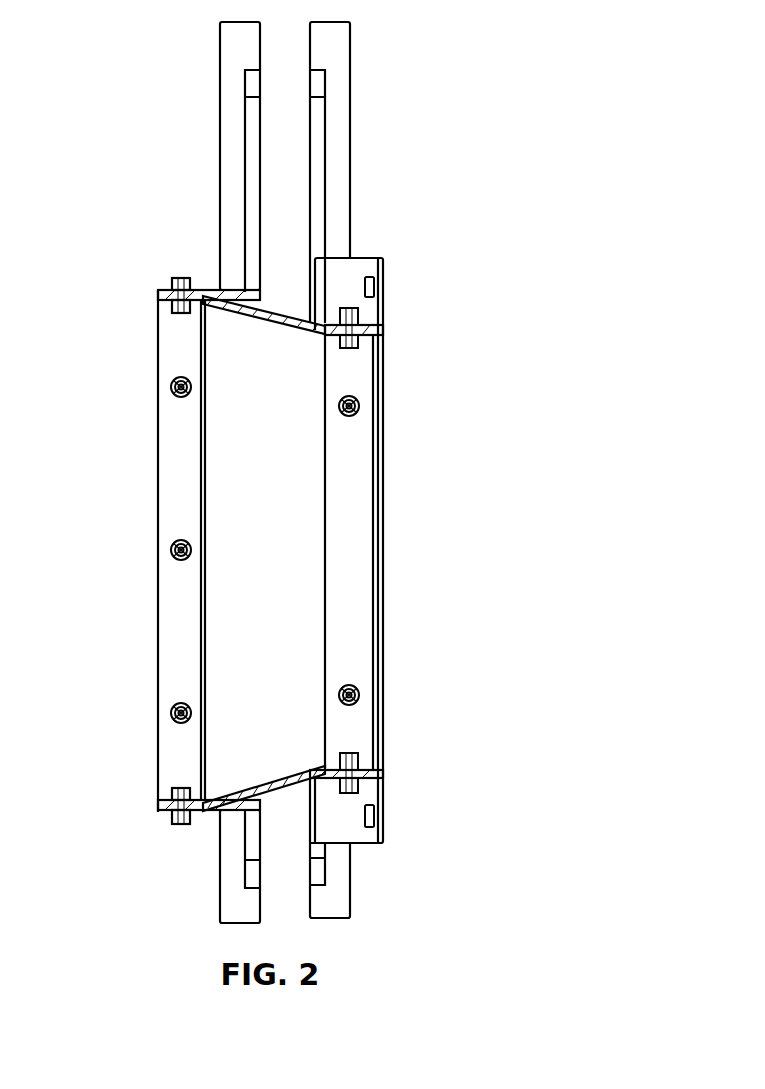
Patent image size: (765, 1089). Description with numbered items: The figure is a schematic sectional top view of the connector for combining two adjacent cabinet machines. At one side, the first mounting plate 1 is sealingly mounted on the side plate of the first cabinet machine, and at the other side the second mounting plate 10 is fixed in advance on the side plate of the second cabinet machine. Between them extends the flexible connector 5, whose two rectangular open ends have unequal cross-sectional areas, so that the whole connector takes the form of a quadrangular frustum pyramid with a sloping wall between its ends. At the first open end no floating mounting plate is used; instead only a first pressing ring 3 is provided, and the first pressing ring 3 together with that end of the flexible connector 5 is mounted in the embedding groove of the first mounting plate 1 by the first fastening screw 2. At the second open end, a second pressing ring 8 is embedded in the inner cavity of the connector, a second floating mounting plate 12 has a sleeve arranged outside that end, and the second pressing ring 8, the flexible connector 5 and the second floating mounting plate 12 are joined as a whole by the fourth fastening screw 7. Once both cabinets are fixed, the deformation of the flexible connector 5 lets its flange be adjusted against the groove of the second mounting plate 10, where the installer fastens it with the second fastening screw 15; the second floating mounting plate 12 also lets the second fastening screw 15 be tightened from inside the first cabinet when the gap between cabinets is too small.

The first mounting plate 1 is at (258, 217).
The second mounting plate 10 is at (307, 217).
The first fastening screw 2 is at (168, 387).
The first pressing ring 3 is at (178, 495).
The flexible connector 5 is at (238, 308).
The fourth fastening screw 7 is at (357, 402).
The second pressing ring 8 is at (355, 582).
The second floating mounting plate 12 is at (375, 315).
The second fastening screw 15 is at (377, 280).